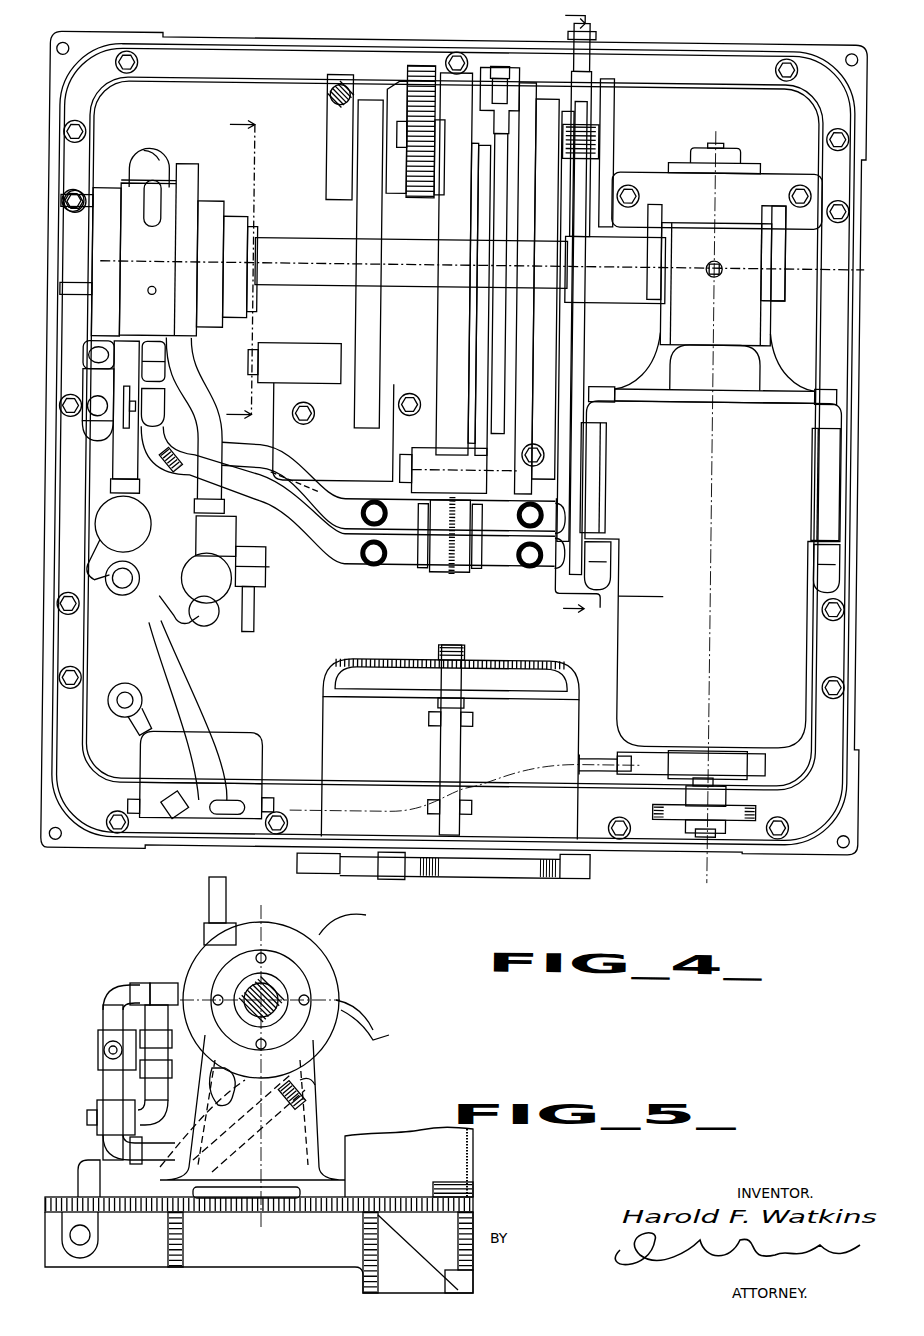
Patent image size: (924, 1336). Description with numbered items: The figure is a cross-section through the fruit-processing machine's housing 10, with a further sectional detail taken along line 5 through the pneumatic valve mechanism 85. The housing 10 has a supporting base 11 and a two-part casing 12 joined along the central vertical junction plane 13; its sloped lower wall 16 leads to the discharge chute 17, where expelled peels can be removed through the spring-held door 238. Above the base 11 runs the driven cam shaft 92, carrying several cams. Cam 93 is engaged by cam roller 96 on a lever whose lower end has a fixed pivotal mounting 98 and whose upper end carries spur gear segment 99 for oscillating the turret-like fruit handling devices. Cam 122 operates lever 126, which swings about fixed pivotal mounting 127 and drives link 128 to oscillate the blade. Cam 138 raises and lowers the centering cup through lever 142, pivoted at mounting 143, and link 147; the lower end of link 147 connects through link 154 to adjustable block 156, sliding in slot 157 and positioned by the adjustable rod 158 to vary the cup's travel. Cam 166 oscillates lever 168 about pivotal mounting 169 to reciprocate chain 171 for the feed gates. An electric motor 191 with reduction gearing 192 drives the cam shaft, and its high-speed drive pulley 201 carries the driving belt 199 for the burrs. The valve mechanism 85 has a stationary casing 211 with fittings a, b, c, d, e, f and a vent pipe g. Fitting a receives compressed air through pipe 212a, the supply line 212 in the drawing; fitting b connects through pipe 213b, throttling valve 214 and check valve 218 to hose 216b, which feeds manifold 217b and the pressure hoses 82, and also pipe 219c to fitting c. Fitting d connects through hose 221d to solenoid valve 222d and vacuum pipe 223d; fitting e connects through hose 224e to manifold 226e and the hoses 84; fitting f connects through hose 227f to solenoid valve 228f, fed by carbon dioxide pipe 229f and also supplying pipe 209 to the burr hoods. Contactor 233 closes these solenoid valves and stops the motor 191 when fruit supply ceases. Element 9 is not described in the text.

In FIG. 4, the housing 10 is at (243, 29).
In FIG. 5, the housing 10 is at (482, 1170).
In FIG. 4, the supporting base 11 is at (248, 92).
In FIG. 5, the supporting base 11 is at (262, 1272).
In FIG. 4, the casing 12 is at (326, 728).
In FIG. 4, the central vertical junction plane 13 is at (464, 746).
In FIG. 4, the lower wall 16 is at (382, 668).
In FIG. 4, the discharge chute 17 is at (500, 668).
In FIG. 4, the section line 5 is at (248, 269).
In FIG. 5, the stub 9 is at (209, 893).
In FIG. 4, the pneumatic hose 82 is at (366, 565).
In FIG. 4, the pneumatic hose 84 is at (375, 504).
In FIG. 4, the pneumatic valve mechanism 85 is at (103, 176).
In FIG. 5, the pneumatic valve mechanism 85 is at (339, 978).
In FIG. 4, the cam shaft 92 is at (298, 240).
In FIG. 5, the cam shaft 92 is at (271, 992).
In FIG. 4, the cam 93 is at (438, 326).
In FIG. 4, the cam roller 96 is at (431, 136).
In FIG. 4, the fixed pivotal mounting 98 is at (408, 66).
In FIG. 4, the spur gear segment 99 is at (443, 73).
In FIG. 4, the cam 122 is at (379, 365).
In FIG. 4, the lever 126 is at (354, 152).
In FIG. 4, the fixed pivotal mounting 127 is at (290, 345).
In FIG. 4, the link 128 is at (336, 76).
In FIG. 4, the cam 138 is at (546, 250).
In FIG. 4, the lever 142 is at (570, 325).
In FIG. 4, the fixed pivotal mounting 143 is at (513, 390).
In FIG. 4, the link 147 is at (589, 135).
In FIG. 4, the link 154 is at (583, 358).
In FIG. 4, the adjustable block 156 is at (600, 470).
In FIG. 4, the slot 157 is at (596, 544).
In FIG. 4, the adjustable rod 158 is at (591, 26).
In FIG. 4, the cam 166 is at (468, 262).
In FIG. 4, the lever 168 is at (496, 158).
In FIG. 4, the pivotal mounting 169 is at (405, 460).
In FIG. 4, the chain 171 is at (497, 66).
In FIG. 4, the electric motor 191 is at (748, 670).
In FIG. 4, the reduction gearing 192 is at (764, 318).
In FIG. 4, the driving belt 199 is at (760, 806).
In FIG. 4, the high-speed drive pulley 201 is at (684, 818).
In FIG. 4, the pipe 209 is at (253, 624).
In FIG. 4, the valve casing 211 is at (180, 189).
In FIG. 5, the valve casing 211 is at (245, 928).
In FIG. 4, the pipe 212 is at (81, 454).
In FIG. 5, the pipe 212a is at (78, 1180).
In FIG. 4, the pipe 213b is at (155, 402).
In FIG. 5, the pipe 213b is at (105, 1005).
In FIG. 5, the throttling valve 214 is at (98, 1050).
In FIG. 4, the pneumatic hose 216b is at (311, 549).
In FIG. 5, the pneumatic hose 216b is at (88, 1116).
In FIG. 4, the manifold 217b is at (446, 570).
In FIG. 4, the check valve 218 is at (178, 348).
In FIG. 5, the check valve 218 is at (170, 1067).
In FIG. 5, the hose or pipe 219c is at (238, 1145).
In FIG. 4, the hose 221d is at (136, 474).
In FIG. 4, the solenoid valve 222d is at (141, 544).
In FIG. 4, the vacuum pipe 223d is at (113, 594).
In FIG. 4, the hose 224e is at (301, 474).
In FIG. 4, the manifold 226e is at (465, 471).
In FIG. 4, the hose 227f is at (138, 168).
In FIG. 4, the solenoid valve 228f is at (161, 559).
In FIG. 4, the pipe 229f is at (108, 652).
In FIG. 4, the contactor 233 is at (229, 738).
In FIG. 4, the spring-held door 238 is at (532, 877).
In FIG. 4, the fitting a is at (99, 347).
In FIG. 5, the fitting a is at (140, 983).
In FIG. 4, the fitting b is at (150, 346).
In FIG. 5, the fitting b is at (165, 983).
In FIG. 5, the fitting c is at (312, 1105).
In FIG. 4, the fitting d is at (158, 164).
In FIG. 5, the fitting d is at (373, 1020).
In FIG. 5, the fitting e is at (230, 1096).
In FIG. 4, the fitting f is at (151, 232).
In FIG. 5, the fitting f is at (341, 922).
In FIG. 4, the vent or exhaust pipe g is at (155, 304).